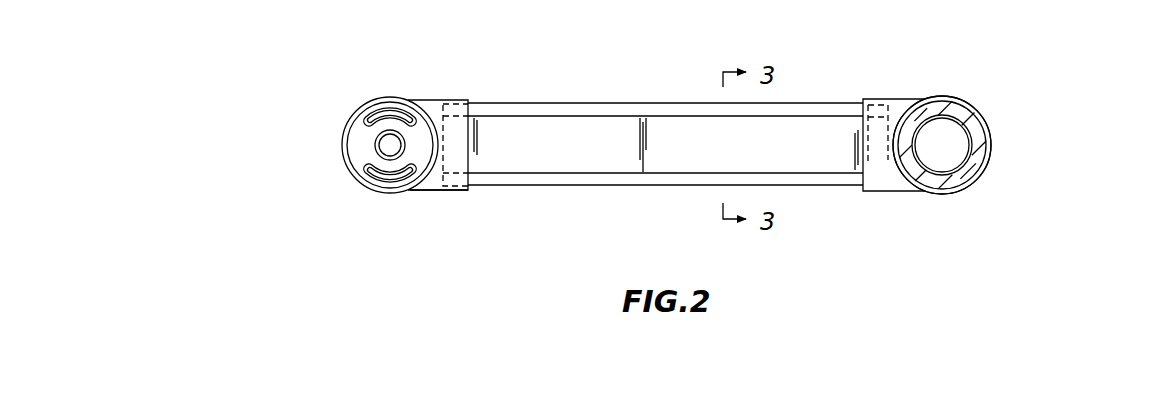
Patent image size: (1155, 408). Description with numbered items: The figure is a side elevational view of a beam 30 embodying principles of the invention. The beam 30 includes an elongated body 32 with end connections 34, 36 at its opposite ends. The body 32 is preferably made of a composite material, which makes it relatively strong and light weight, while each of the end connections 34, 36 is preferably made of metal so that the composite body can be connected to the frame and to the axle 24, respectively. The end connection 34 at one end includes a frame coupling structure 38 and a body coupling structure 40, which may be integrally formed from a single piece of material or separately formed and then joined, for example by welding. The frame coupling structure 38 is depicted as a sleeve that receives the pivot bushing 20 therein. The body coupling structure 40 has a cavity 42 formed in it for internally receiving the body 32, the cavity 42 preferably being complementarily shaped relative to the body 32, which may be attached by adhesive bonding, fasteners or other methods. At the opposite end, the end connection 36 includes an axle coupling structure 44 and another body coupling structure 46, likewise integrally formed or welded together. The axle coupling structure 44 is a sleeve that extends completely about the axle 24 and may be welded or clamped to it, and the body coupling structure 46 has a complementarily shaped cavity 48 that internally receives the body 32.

The pivot bushing 20 is at (347, 172).
The axle 24 is at (990, 157).
The beam 30 is at (914, 59).
The body 32 is at (809, 188).
The end connection 34 is at (431, 196).
The end connection 36 is at (926, 200).
The frame coupling structure 38 is at (347, 117).
The body coupling structure 40 is at (436, 98).
The cavity 42 is at (443, 162).
The axle coupling structure 44 is at (992, 116).
The body coupling structure 46 is at (877, 97).
The cavity 48 is at (868, 185).